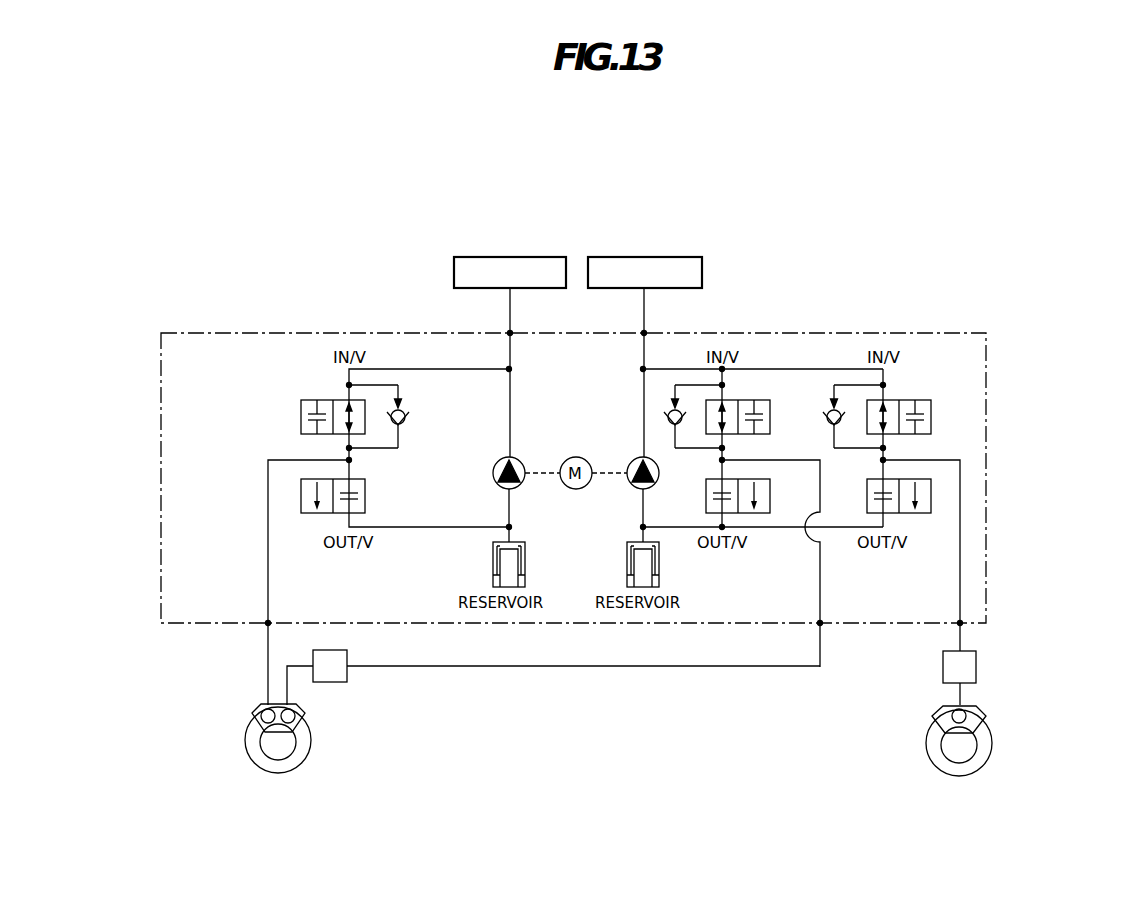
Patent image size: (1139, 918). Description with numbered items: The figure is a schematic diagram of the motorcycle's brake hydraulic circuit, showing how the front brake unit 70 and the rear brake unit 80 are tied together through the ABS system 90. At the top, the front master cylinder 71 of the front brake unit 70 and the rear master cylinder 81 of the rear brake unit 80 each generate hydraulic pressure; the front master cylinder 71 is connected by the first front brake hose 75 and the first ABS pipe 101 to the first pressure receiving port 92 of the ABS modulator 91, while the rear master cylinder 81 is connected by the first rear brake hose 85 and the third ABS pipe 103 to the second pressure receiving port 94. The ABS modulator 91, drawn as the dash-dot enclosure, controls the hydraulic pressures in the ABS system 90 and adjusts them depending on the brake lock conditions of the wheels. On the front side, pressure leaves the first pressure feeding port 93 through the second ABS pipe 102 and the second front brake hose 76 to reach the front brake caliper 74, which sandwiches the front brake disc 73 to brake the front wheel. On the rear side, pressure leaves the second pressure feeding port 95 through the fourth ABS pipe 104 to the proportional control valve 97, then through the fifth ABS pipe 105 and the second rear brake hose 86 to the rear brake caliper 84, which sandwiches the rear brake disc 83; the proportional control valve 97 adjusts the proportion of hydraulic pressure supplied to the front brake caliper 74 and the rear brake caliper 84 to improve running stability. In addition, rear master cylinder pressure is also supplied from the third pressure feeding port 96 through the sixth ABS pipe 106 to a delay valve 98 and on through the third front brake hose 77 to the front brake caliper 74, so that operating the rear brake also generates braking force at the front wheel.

The front brake unit 70 is at (475, 255).
The front master cylinder 71 is at (509, 256).
The front brake disc 73 is at (275, 767).
The front brake caliper 74 is at (258, 707).
The first front brake hose 75 is at (448, 310).
The second front brake hose 76 is at (199, 664).
The third front brake hose 77 is at (300, 668).
The rear brake unit 80 is at (681, 255).
The rear master cylinder 81 is at (644, 256).
The rear brake disc 83 is at (958, 770).
The rear brake caliper 84 is at (985, 713).
The first rear brake hose 85 is at (709, 310).
The second rear brake hose 86 is at (1038, 695).
The ABS system 90 is at (614, 463).
The ABS modulator 91 is at (987, 418).
The first pressure receiving port 92 is at (514, 331).
The first pressure feeding port 93 is at (268, 622).
The second pressure receiving port 94 is at (640, 331).
The second pressure feeding port 95 is at (965, 624).
The third pressure feeding port 96 is at (820, 628).
The proportional control valve 97 is at (977, 667).
The delay valve 98 is at (330, 682).
The first ABS pipe 101 is at (509, 308).
The second ABS pipe 102 is at (268, 665).
The third ABS pipe 103 is at (645, 308).
The fourth ABS pipe 104 is at (965, 640).
The fifth ABS pipe 105 is at (965, 694).
The sixth ABS pipe 106 is at (566, 668).